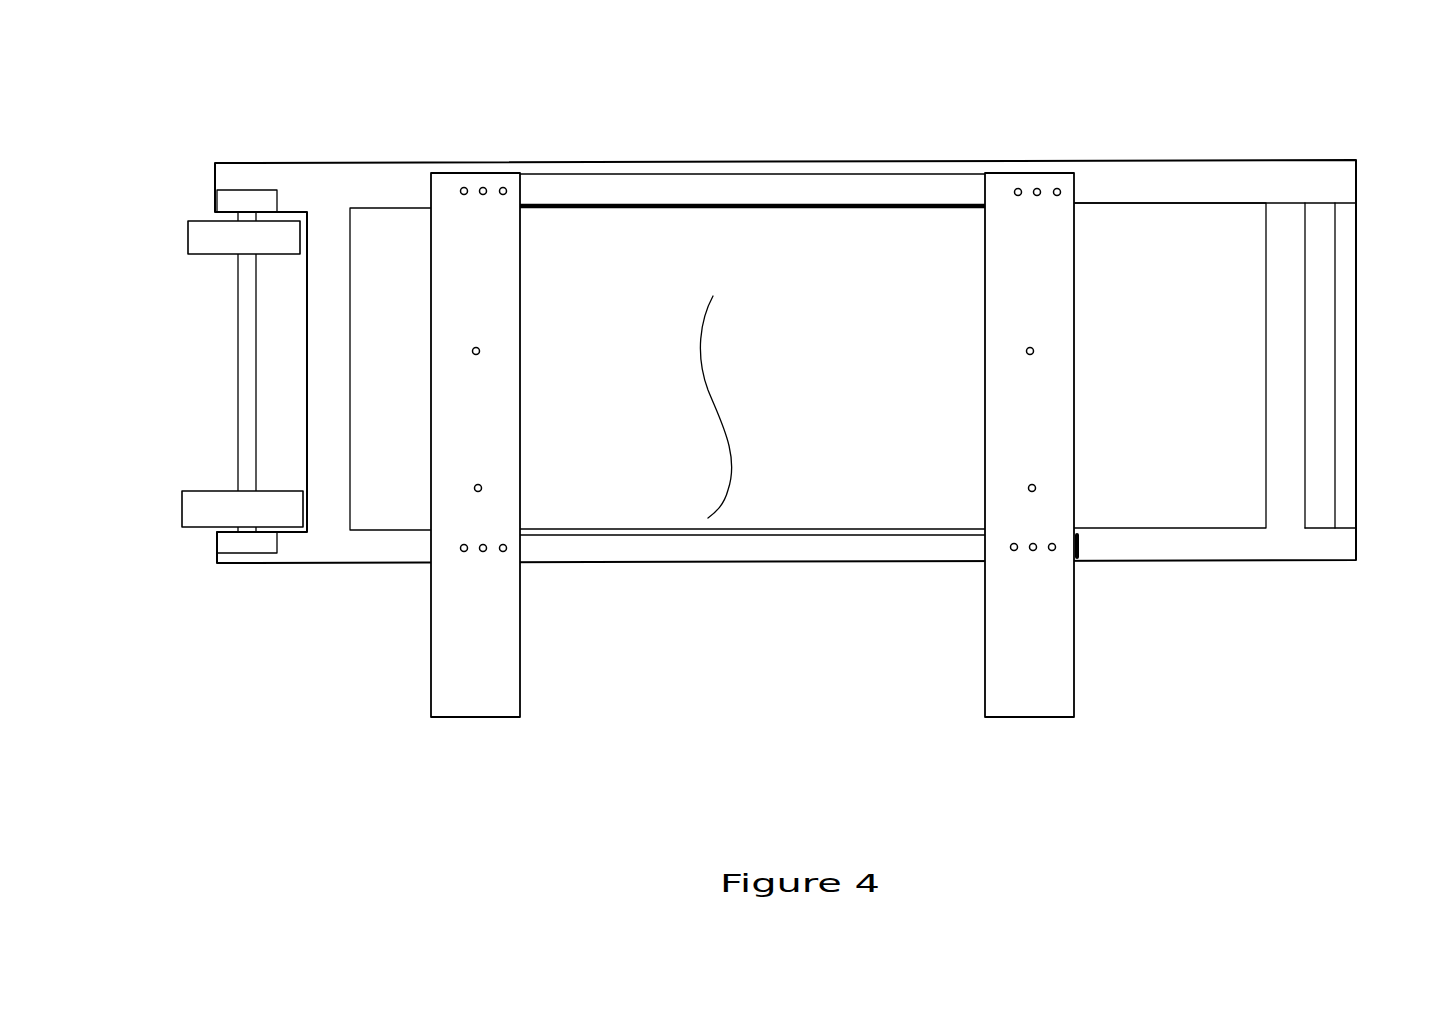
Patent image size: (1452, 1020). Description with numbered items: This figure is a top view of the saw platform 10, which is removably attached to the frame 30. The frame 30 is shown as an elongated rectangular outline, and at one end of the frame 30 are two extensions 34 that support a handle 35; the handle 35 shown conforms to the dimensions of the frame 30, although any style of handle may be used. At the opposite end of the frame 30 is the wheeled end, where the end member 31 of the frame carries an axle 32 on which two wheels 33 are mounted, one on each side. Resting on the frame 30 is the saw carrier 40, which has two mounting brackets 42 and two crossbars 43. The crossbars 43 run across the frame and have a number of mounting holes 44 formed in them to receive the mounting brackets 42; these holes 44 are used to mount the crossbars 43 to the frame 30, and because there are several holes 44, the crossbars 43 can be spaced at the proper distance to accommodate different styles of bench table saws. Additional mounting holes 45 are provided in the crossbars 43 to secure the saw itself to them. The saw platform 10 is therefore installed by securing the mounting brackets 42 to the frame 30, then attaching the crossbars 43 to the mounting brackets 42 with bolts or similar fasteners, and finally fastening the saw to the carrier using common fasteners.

The saw platform 10 is at (357, 122).
The frame 30 is at (762, 155).
The frame end member 31 is at (297, 563).
The axle 32 is at (228, 337).
The wheel 33 is at (205, 262).
The extensions 34 is at (1212, 152).
The handle 35 is at (1356, 328).
The saw carrier 40 is at (545, 603).
The mounting brackets 42 is at (662, 207).
The crossbars 43 is at (527, 380).
The mounting holes 44 is at (521, 217).
The mounting holes 45 is at (431, 418).